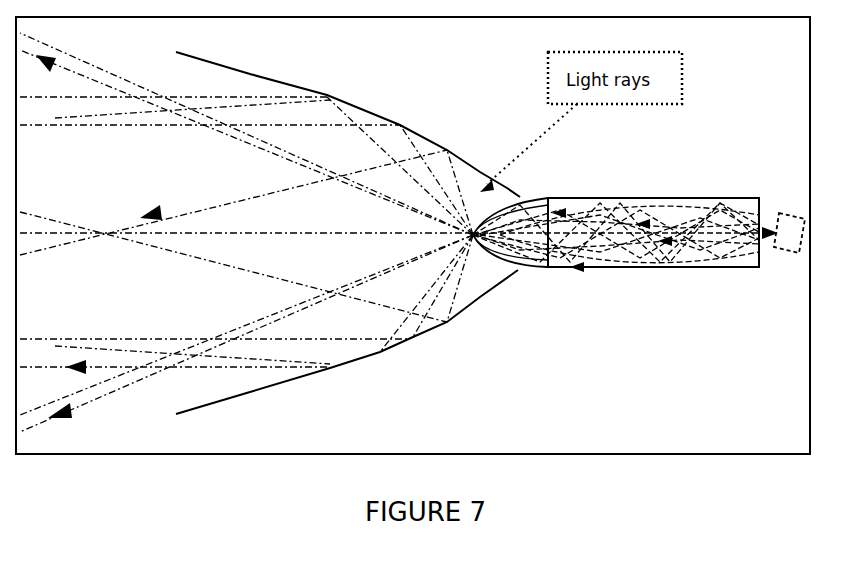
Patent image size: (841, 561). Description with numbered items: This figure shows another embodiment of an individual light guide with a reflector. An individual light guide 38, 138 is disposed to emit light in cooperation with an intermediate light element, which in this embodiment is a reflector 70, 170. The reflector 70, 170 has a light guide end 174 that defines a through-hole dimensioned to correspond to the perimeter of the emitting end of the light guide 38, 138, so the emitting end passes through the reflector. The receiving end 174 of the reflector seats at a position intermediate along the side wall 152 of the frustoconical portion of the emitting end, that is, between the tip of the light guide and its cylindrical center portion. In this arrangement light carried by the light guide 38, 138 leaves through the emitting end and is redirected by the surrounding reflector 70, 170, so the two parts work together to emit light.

The reflector 70 is at (348, 224).
The reflector 170 is at (388, 110).
The light guide end 174 is at (520, 196).
The side wall 152 is at (535, 263).
The individual light guide 38 is at (639, 269).
The individual light guide 138 is at (680, 268).